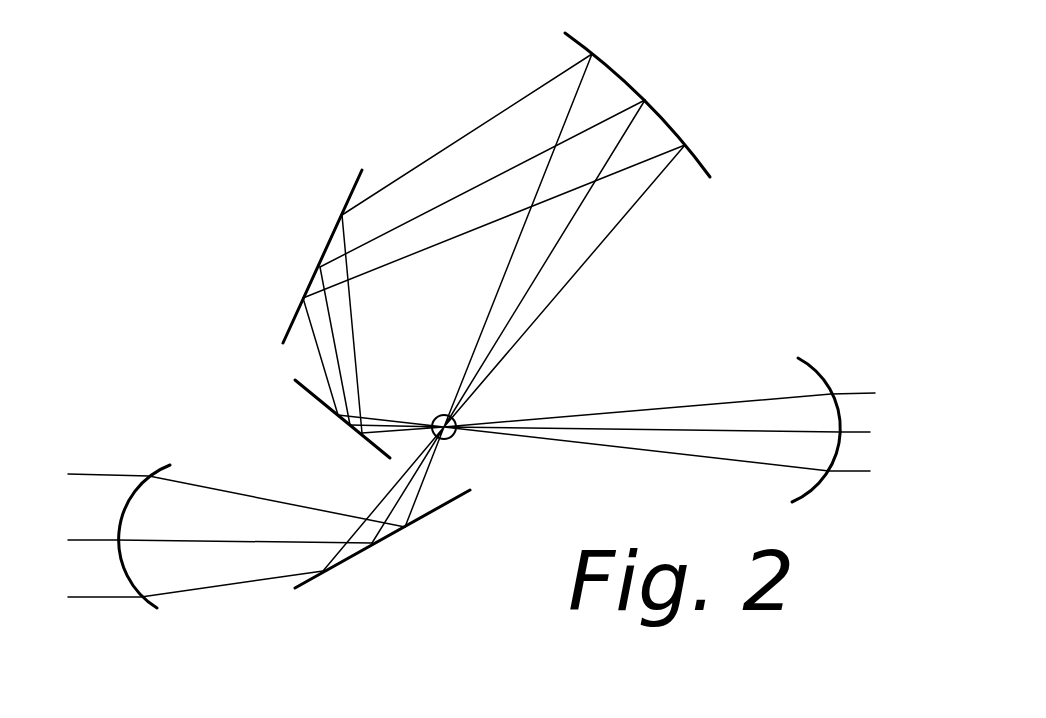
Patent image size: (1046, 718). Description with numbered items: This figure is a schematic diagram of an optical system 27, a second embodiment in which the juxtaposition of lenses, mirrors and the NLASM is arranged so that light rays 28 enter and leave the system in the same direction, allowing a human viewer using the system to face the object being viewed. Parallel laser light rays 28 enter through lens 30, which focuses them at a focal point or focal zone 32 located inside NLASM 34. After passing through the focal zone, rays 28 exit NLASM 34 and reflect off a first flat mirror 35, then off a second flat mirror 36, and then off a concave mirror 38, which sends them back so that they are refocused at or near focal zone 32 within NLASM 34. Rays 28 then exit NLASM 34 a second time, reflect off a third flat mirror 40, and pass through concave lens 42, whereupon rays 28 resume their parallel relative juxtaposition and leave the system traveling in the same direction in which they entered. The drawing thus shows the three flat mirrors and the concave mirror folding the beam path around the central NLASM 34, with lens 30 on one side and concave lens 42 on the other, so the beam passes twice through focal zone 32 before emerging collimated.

The optical system 27 is at (438, 138).
The light rays 28 is at (862, 470).
The lens 30 is at (812, 362).
The focal point or focal zone 32 is at (440, 413).
The NLASM 34 is at (456, 438).
The first flat mirror 35 is at (320, 405).
The second flat mirror 36 is at (327, 244).
The concave mirror 38 is at (660, 103).
The third flat mirror 40 is at (427, 518).
The concave lens 42 is at (125, 500).